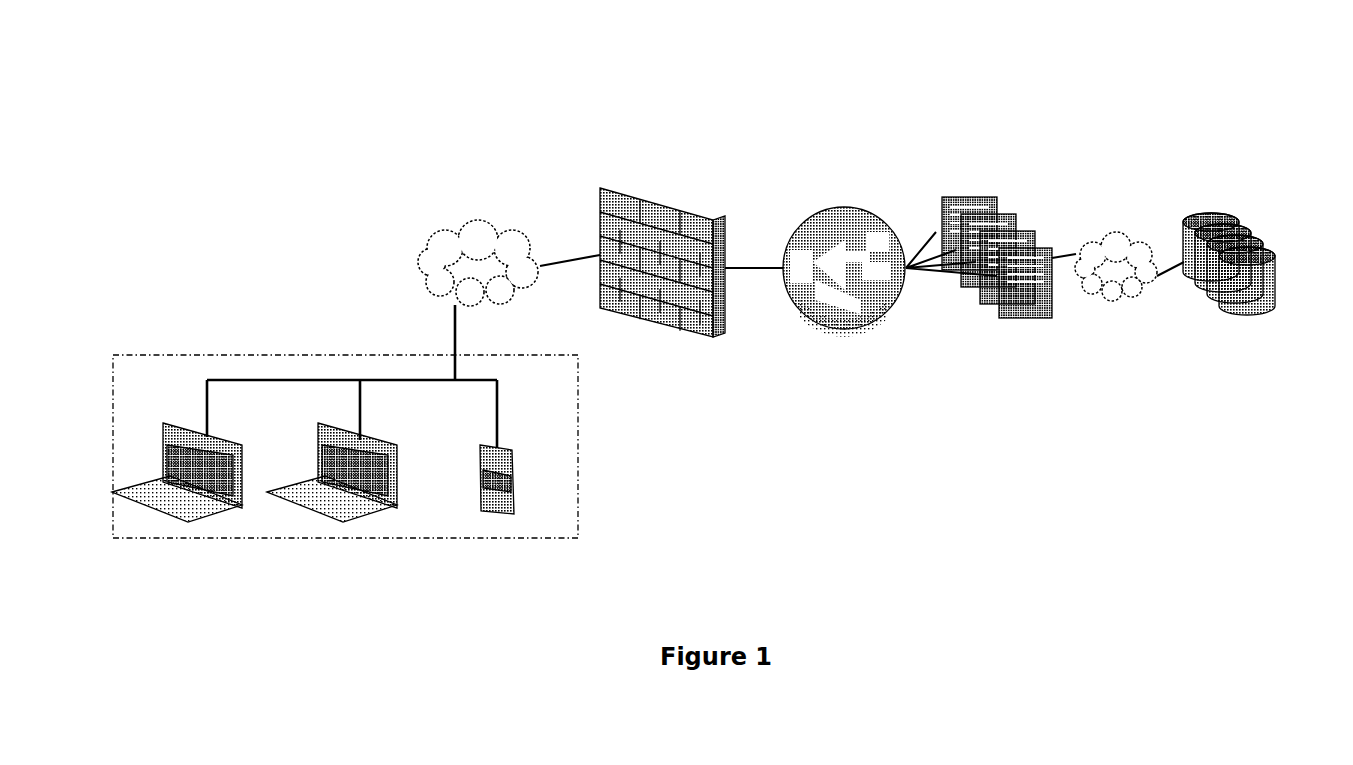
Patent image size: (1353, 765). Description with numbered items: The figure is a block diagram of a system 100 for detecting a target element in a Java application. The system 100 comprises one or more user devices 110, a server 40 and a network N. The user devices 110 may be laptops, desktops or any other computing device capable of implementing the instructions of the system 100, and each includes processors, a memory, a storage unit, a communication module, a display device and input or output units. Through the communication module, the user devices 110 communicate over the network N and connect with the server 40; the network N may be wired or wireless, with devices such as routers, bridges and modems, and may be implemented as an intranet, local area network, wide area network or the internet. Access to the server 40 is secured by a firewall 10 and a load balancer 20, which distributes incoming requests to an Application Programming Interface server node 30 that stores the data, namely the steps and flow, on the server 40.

The system 100 is at (118, 92).
The network N is at (468, 228).
The firewall 10 is at (663, 247).
The load balancer 20 is at (830, 250).
The Application Programming Interface (API) server node 30 is at (978, 248).
The server 40 is at (1262, 250).
The user devices 110 is at (287, 548).